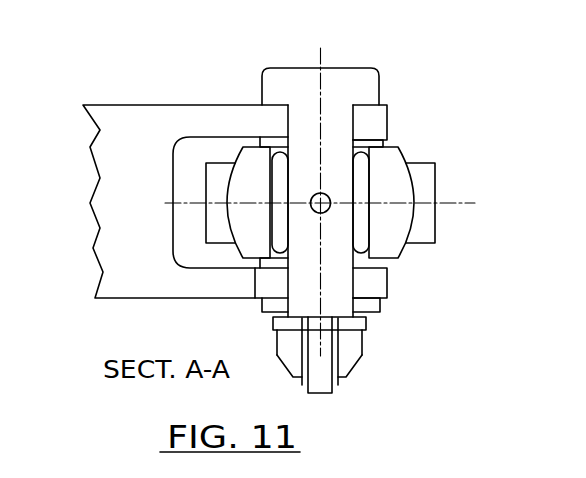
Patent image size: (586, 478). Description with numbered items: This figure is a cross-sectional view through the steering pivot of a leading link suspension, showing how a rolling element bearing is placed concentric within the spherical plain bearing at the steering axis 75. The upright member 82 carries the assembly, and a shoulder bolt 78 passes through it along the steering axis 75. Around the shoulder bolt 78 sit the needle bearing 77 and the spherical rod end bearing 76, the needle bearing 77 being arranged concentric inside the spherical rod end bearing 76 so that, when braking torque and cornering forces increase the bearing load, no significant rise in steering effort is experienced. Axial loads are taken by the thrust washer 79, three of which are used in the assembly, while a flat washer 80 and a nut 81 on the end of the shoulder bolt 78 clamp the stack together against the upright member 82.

The steering axis 75 is at (318, 52).
The spherical rod end bearing 76 is at (436, 177).
The needle bearing 77 is at (370, 237).
The shoulder bolt 78 is at (380, 87).
The thrust washer 79 is at (364, 270).
The flat washer 80 is at (367, 324).
The nut 81 is at (353, 368).
The upright member 82 is at (115, 104).